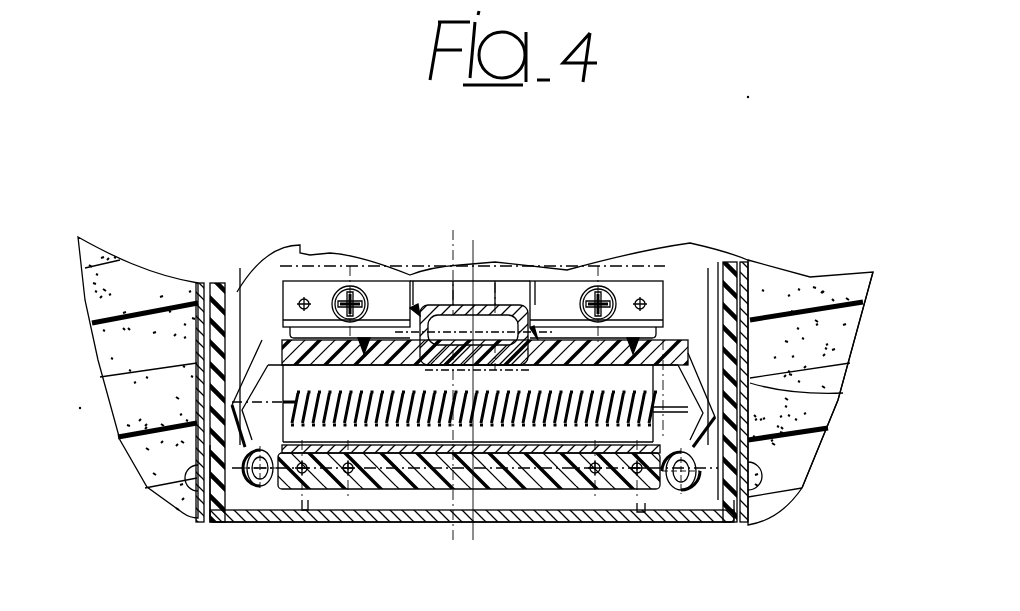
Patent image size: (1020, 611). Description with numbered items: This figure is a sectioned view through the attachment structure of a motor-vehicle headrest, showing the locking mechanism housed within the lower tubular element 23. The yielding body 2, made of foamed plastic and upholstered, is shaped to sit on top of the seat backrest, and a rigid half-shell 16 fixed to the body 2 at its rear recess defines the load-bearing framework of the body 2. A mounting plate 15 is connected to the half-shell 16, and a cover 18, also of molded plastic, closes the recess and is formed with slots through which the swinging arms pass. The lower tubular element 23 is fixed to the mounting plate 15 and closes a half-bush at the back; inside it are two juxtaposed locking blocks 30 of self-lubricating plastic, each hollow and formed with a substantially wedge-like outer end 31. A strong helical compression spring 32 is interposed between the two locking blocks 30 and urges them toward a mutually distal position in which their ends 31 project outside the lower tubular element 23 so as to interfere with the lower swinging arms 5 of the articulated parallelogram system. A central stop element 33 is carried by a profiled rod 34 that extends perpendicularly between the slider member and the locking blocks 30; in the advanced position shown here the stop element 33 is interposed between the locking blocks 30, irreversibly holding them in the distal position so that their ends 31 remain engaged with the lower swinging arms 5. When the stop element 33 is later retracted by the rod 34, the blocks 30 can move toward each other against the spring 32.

The yielding body 2 is at (793, 478).
The lower swinging arms 5 is at (258, 490).
The mounting plate 15 is at (278, 257).
The rigid half-shell 16 is at (845, 408).
The cover 18 is at (513, 515).
The lower tubular element 23 is at (378, 480).
The locking blocks 30 is at (364, 350).
The wedge-like outer ends 31 is at (240, 268).
The helical compression spring 32 is at (463, 413).
The central stop element 33 is at (498, 302).
The profiled rod 34 is at (467, 272).